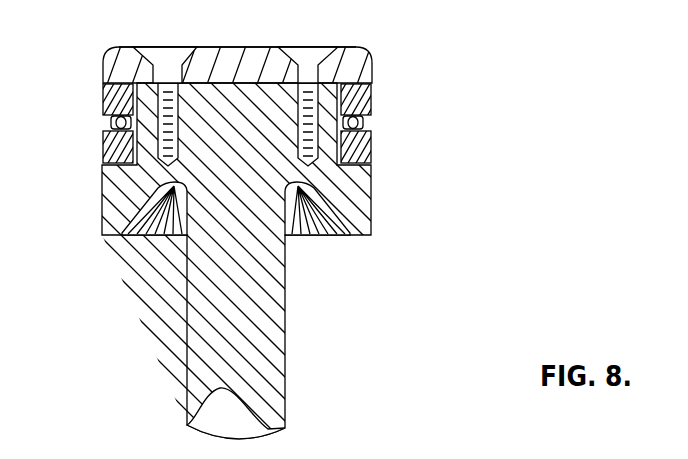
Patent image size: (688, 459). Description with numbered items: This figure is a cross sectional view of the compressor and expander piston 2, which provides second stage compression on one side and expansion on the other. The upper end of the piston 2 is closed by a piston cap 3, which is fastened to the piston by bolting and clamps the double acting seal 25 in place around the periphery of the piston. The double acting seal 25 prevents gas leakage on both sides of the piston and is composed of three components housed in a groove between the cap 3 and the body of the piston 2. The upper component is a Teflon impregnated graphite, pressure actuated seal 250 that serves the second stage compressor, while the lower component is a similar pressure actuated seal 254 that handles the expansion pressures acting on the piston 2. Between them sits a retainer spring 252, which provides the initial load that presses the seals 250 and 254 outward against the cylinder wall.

The piston 2 is at (365, 197).
The piston cap 3 is at (355, 60).
The double acting seal 25 is at (377, 110).
The seal 250 is at (105, 100).
The retainer spring 252 is at (369, 119).
The seal 254 is at (368, 145).